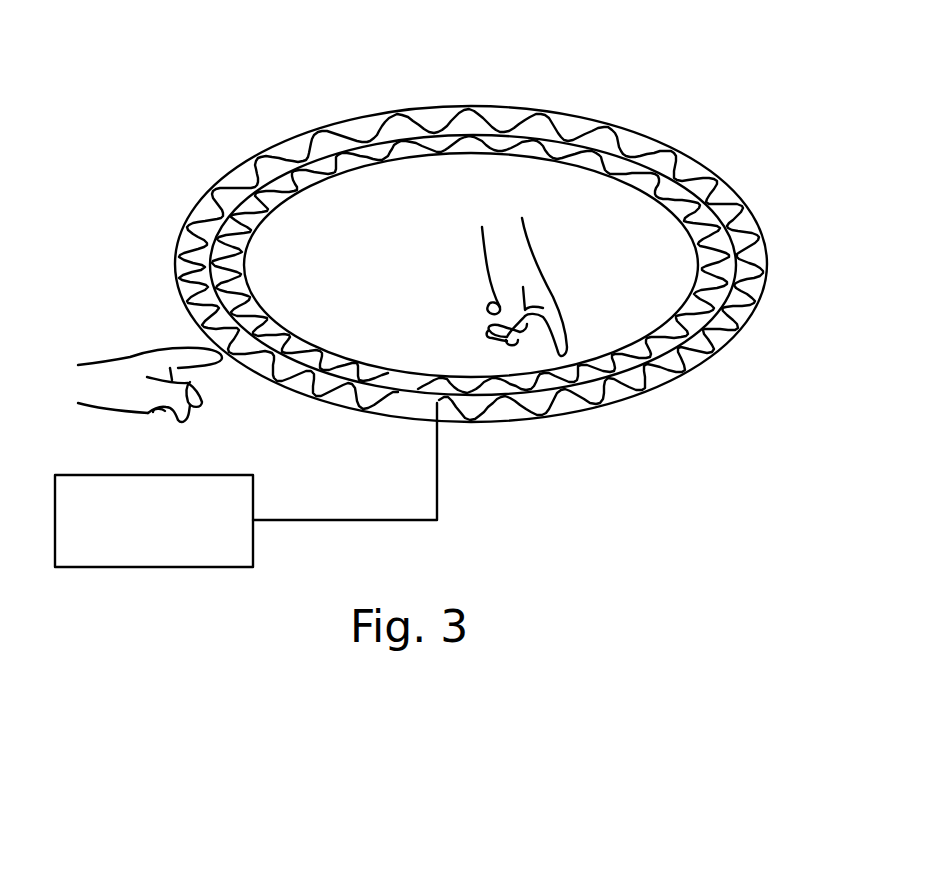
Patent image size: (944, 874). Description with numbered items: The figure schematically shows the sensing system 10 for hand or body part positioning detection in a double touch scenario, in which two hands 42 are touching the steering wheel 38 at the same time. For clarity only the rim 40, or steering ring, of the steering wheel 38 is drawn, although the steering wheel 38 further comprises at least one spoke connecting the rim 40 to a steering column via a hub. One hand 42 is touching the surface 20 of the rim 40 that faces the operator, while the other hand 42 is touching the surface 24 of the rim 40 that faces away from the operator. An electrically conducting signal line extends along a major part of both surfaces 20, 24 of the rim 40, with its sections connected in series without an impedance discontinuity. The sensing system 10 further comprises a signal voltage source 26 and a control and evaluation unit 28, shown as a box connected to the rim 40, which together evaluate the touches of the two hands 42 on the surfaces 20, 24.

The sensing system 10 is at (178, 123).
The surface of the rim facing the operator 20 is at (757, 282).
The surface of the rim facing away from the operator 24 is at (238, 237).
The signal voltage source 26 is at (246, 485).
The control and evaluation unit 28 is at (190, 534).
The steering wheel 38 is at (681, 131).
The rim 40 is at (442, 105).
The hand 42 is at (123, 378).